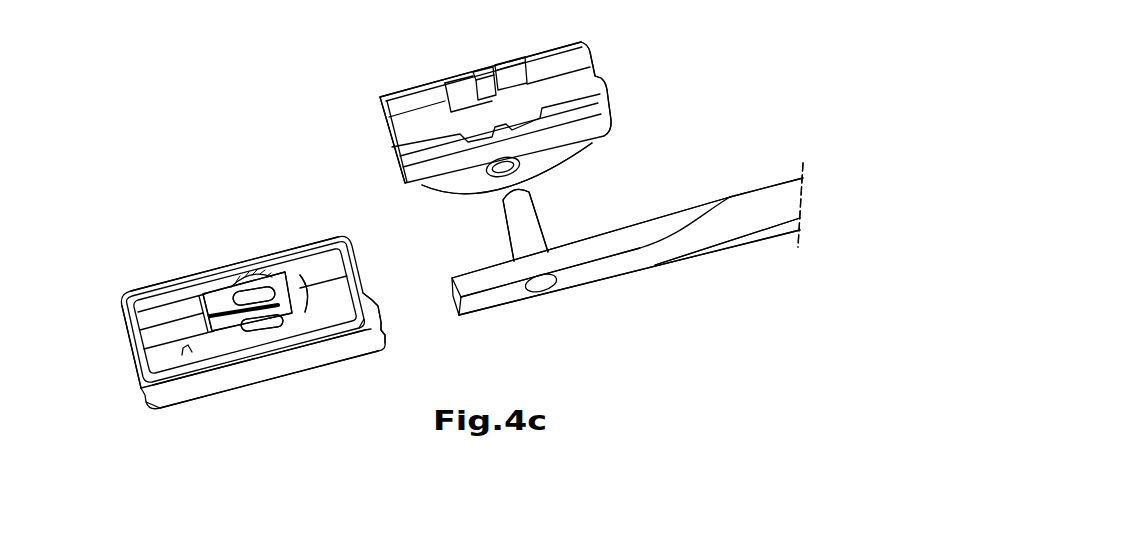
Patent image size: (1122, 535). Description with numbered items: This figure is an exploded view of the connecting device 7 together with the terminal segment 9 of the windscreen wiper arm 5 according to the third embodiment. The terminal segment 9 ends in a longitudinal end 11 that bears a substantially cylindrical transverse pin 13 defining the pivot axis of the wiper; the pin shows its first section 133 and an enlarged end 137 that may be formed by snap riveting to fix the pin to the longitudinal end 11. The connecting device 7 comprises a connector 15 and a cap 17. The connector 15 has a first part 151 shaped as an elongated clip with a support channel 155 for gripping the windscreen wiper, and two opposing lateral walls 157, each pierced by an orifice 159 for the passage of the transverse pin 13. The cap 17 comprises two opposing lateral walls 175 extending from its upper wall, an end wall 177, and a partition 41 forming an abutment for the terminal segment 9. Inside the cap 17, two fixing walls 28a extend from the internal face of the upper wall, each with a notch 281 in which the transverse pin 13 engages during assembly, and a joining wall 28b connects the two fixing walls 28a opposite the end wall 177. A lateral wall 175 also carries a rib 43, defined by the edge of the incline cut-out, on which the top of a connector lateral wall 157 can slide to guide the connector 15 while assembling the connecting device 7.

The first part of the connector 151 is at (402, 67).
The connector 15 is at (360, 123).
The connecting device 7 is at (290, 152).
The cap 17 is at (225, 230).
The lateral walls of the cap 175 is at (160, 302).
The fixing wall 28a is at (220, 300).
The notch 281 is at (299, 312).
The joining wall 28b is at (143, 350).
The rib 43 is at (370, 275).
The end wall 177 is at (135, 352).
The partition 41 is at (138, 371).
The support channel 155 is at (600, 83).
The lateral walls of the connector 157 is at (557, 150).
The orifice of the lateral wall 159 is at (499, 170).
The transverse pin 13 is at (534, 202).
The first section of the transverse pin 133 is at (522, 228).
The end of the transverse pin 137 is at (537, 292).
The longitudinal end 11 is at (634, 258).
The terminal segment 9 is at (594, 318).
The windscreen wiper arm 5 is at (743, 205).